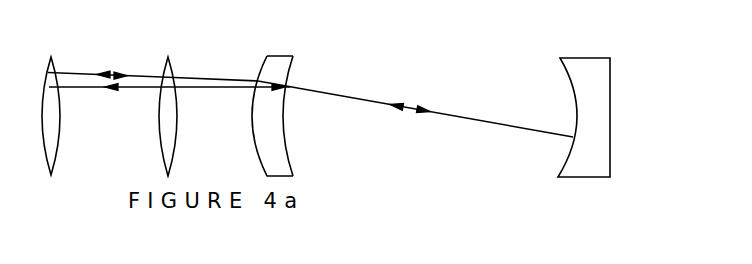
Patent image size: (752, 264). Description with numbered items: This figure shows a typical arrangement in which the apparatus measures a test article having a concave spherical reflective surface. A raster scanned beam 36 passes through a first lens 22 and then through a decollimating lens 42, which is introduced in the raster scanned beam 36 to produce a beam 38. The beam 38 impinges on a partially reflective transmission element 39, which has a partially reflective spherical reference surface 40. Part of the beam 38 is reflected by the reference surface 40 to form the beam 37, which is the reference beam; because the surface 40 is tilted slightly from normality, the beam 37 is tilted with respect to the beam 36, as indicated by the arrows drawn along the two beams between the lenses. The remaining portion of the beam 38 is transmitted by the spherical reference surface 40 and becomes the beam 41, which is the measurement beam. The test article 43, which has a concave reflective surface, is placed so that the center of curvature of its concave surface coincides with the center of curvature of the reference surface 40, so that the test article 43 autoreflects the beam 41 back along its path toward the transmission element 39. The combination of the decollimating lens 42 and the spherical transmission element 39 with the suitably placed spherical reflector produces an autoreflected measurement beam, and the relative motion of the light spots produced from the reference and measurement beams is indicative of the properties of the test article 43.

The first lens 22 is at (52, 57).
The raster scanned beam 36 is at (81, 73).
The reference beam 37 is at (194, 88).
The beam 38 is at (193, 77).
The partially reflective transmission element 39 is at (294, 101).
The partially reflective spherical reference surface 40 is at (290, 66).
The measurement beam 41 is at (413, 103).
The decollimating lens 42 is at (168, 57).
The test article 43 is at (572, 83).